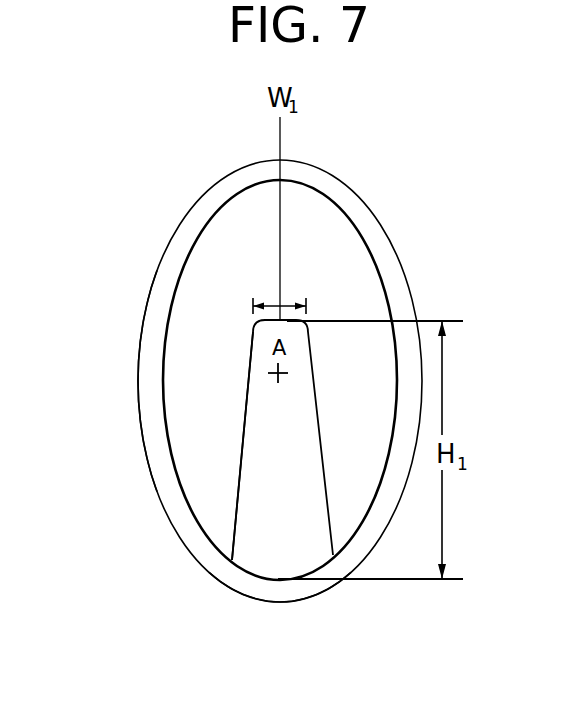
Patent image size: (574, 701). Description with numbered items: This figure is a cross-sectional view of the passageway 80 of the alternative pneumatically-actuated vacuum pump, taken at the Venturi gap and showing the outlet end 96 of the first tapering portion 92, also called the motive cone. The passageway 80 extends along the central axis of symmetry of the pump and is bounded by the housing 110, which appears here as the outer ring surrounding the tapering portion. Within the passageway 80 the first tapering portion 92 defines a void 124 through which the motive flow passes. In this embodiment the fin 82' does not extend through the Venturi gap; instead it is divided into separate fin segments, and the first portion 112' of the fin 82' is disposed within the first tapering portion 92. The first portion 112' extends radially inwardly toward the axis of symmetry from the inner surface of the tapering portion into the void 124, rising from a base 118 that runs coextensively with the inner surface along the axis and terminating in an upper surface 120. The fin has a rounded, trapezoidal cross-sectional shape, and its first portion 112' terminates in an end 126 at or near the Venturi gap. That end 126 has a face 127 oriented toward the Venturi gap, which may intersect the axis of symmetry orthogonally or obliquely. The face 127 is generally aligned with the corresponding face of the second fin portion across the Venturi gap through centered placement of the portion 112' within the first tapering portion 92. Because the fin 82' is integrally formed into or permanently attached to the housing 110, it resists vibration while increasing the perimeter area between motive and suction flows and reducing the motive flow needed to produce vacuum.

The passageway 80 is at (197, 263).
The first tapering portion 92 is at (346, 243).
The outlet end 96 is at (310, 208).
The housing 110 is at (208, 203).
The void 124 is at (182, 338).
The base 118 is at (264, 580).
The first portion 112' is at (199, 440).
The face 127 is at (262, 402).
The end 126 is at (262, 458).
The fin 82' is at (231, 375).
The upper surface 120 is at (300, 313).